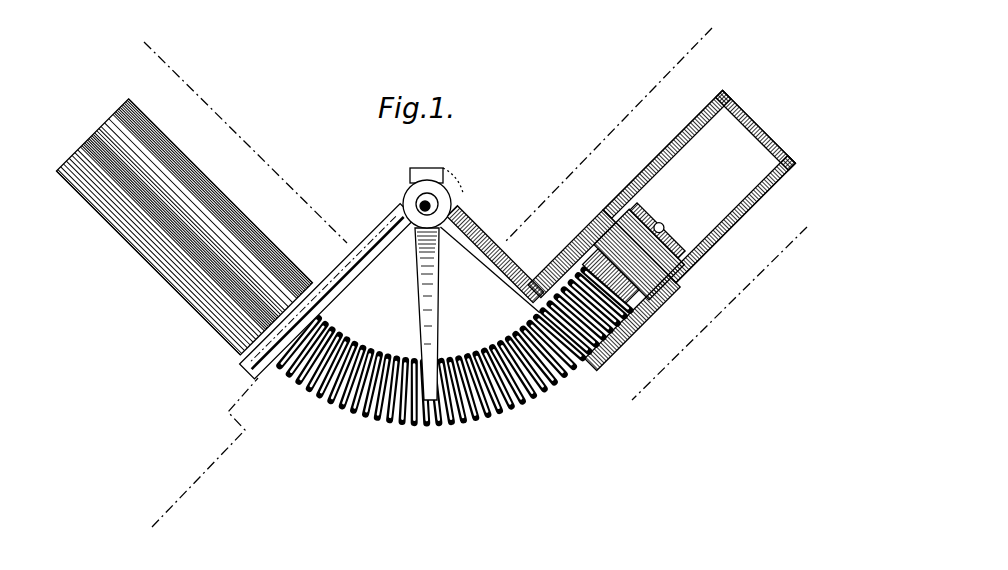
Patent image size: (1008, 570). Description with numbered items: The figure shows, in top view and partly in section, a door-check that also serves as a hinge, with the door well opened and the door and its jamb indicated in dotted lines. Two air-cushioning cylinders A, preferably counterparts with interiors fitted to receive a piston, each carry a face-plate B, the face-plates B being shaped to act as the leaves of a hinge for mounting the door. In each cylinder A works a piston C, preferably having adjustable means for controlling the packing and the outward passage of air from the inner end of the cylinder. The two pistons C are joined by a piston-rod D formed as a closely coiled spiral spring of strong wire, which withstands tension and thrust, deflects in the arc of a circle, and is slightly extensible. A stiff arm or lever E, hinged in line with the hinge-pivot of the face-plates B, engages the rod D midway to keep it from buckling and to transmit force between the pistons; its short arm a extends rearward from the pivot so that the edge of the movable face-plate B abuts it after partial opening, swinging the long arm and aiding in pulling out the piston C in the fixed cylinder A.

The air-cushioning cylinder A is at (425, 222).
The face-plate B is at (373, 245).
The piston C is at (635, 257).
The piston-rod D is at (453, 345).
The arm or lever E is at (433, 314).
The short arm a is at (428, 175).